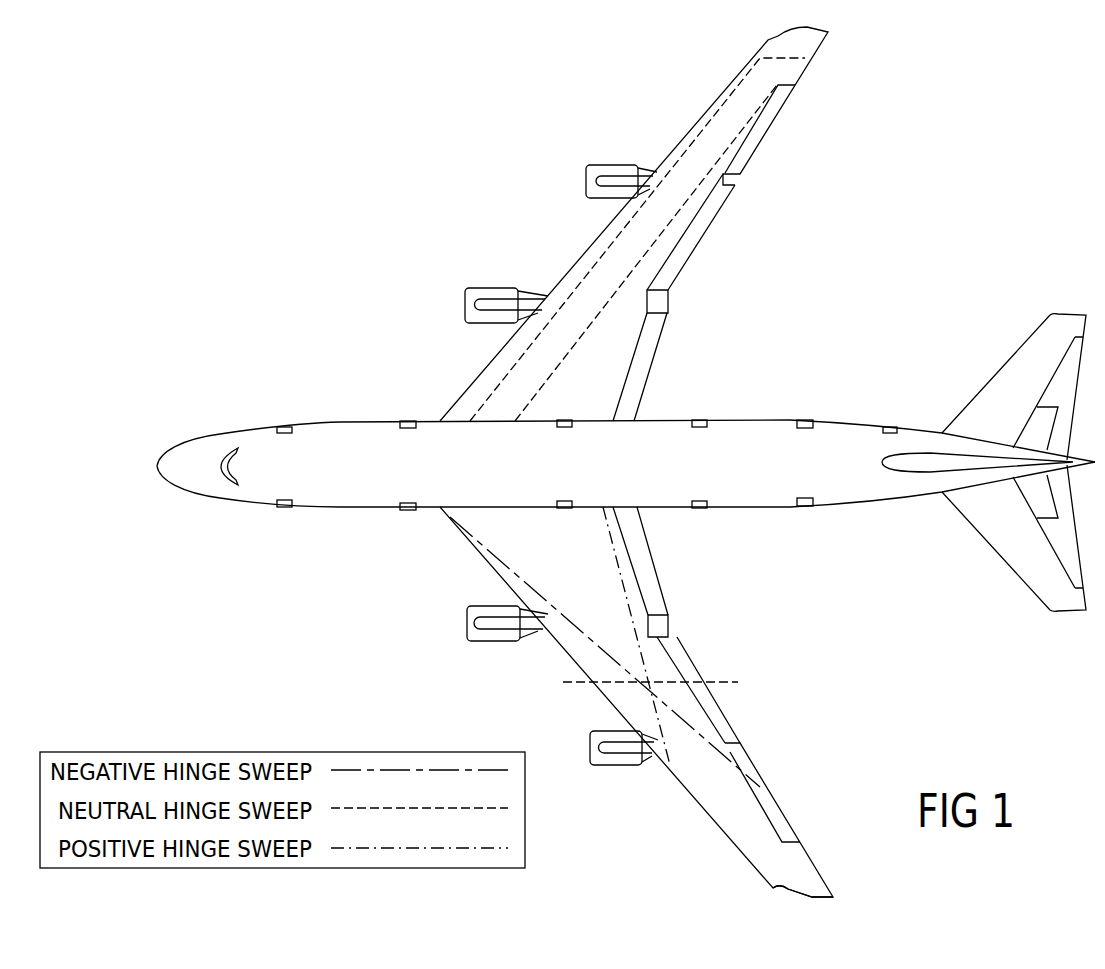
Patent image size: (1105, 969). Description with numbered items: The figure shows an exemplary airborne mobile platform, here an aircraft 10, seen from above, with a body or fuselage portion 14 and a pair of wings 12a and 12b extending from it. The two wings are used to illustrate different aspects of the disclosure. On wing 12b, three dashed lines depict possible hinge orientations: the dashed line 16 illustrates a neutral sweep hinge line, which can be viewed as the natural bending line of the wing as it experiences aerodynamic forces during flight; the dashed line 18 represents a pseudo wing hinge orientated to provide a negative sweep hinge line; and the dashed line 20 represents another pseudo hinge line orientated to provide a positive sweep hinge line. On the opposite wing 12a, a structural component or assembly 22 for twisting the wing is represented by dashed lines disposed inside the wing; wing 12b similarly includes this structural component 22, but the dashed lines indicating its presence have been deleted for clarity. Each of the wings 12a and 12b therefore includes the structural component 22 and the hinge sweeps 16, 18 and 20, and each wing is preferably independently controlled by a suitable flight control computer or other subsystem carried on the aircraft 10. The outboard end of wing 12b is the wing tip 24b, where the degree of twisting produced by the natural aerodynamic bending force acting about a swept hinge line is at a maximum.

The aircraft 10 is at (716, 232).
The wing 12a is at (597, 253).
The wing 12b is at (703, 790).
The fuselage portion 14 is at (377, 438).
The dashed line 16 is at (578, 687).
The dashed line 18 is at (587, 643).
The dashed line 20 is at (622, 570).
The structural component 22 is at (703, 117).
The wing tip 24b is at (778, 890).